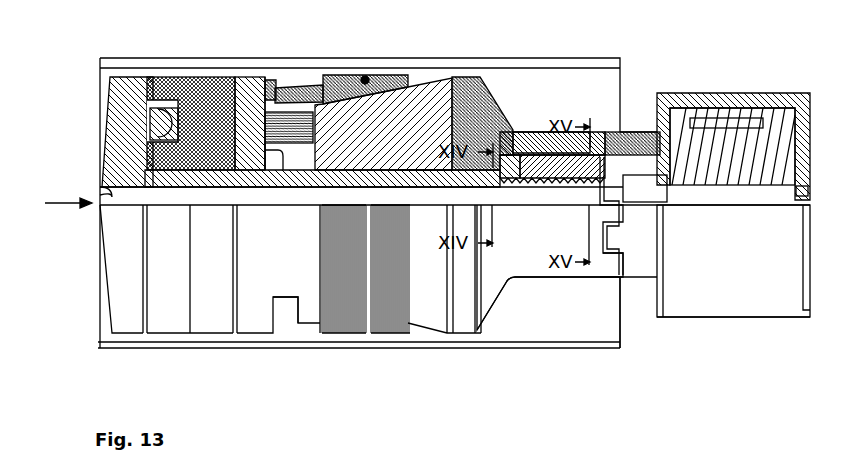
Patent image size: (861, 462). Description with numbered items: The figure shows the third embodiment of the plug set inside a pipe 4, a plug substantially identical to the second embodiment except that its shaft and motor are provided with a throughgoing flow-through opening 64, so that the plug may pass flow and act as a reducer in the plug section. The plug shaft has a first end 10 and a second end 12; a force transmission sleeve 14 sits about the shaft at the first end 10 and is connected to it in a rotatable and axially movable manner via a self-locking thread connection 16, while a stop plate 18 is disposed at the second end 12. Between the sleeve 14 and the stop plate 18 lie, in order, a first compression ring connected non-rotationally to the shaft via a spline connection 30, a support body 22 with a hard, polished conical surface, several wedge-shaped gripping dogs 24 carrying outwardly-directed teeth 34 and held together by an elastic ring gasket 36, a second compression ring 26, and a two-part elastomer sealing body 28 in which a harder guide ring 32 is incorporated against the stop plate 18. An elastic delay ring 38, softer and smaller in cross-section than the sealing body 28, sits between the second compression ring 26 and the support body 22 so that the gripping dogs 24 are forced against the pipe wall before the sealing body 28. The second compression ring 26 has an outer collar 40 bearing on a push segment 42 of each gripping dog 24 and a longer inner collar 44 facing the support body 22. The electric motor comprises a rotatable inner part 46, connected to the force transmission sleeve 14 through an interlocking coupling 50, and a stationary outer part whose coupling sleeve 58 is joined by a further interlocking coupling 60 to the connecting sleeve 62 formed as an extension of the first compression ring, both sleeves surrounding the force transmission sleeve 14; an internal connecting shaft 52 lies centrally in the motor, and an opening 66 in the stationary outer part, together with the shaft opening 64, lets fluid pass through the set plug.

The pipe 4 is at (599, 64).
The first end 10 is at (627, 208).
The second end 12 is at (175, 178).
The force transmission sleeve 14 is at (572, 167).
The self-locking thread connection 16 is at (533, 181).
The stop plate 18 is at (115, 107).
The support body 22 is at (442, 100).
The gripping dogs 24 is at (400, 77).
The second compression ring 26 is at (246, 88).
The two-part sealing body 28 is at (193, 95).
The spline connection 30 is at (437, 174).
The guide ring 32 is at (162, 122).
The teeth 34 is at (336, 82).
The ring gasket 36 is at (367, 78).
The delay ring 38 is at (295, 140).
The outer collar 40 is at (272, 82).
The push segment 42 is at (298, 87).
The inner collar 44 is at (278, 162).
The rotatable inner part 46 is at (700, 147).
The interlocking coupling 50 is at (645, 188).
The connecting shaft 52 is at (737, 192).
The coupling sleeve 58 is at (637, 135).
The interlocking coupling 60 is at (607, 133).
The connecting sleeve 62 is at (533, 138).
The flow-through opening 64 is at (110, 197).
The opening 66 is at (807, 192).